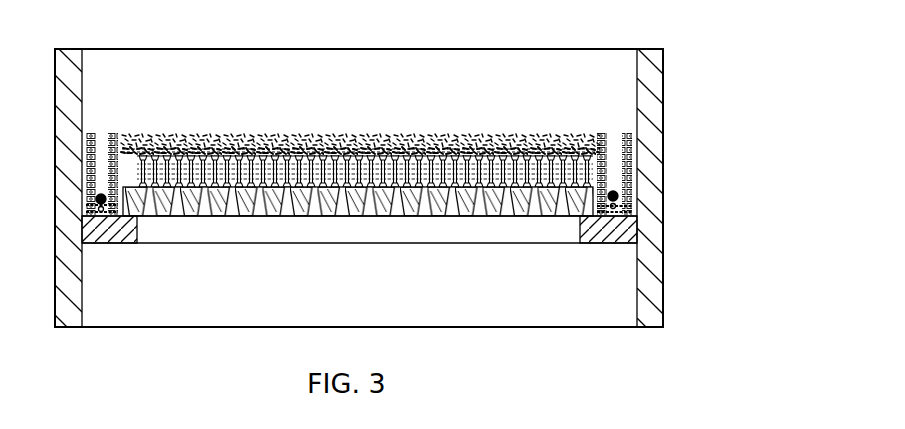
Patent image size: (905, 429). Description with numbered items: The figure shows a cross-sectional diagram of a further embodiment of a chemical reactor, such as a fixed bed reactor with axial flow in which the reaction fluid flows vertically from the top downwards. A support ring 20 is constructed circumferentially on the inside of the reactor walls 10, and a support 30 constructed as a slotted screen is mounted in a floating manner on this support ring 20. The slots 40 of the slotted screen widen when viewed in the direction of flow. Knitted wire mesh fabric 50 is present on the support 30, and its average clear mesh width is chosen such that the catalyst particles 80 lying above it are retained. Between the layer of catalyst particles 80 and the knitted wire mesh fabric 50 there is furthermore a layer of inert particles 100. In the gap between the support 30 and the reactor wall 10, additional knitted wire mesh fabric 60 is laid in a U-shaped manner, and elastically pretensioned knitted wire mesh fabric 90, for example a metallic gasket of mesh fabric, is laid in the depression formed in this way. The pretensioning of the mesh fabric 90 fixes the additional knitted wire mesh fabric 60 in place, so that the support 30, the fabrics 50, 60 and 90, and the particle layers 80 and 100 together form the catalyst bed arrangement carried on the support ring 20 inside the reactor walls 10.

The reactor wall 10 is at (655, 90).
The support ring 20 is at (620, 229).
The support 30 is at (372, 186).
The slots 40 is at (410, 186).
The knitted wire mesh fabric 50 is at (276, 166).
The additional knitted wire mesh fabric 60 is at (118, 133).
The catalyst particles 80 is at (440, 135).
The elastically pretensioned knitted wire mesh fabric 90 is at (100, 196).
The inert particles 100 is at (508, 138).